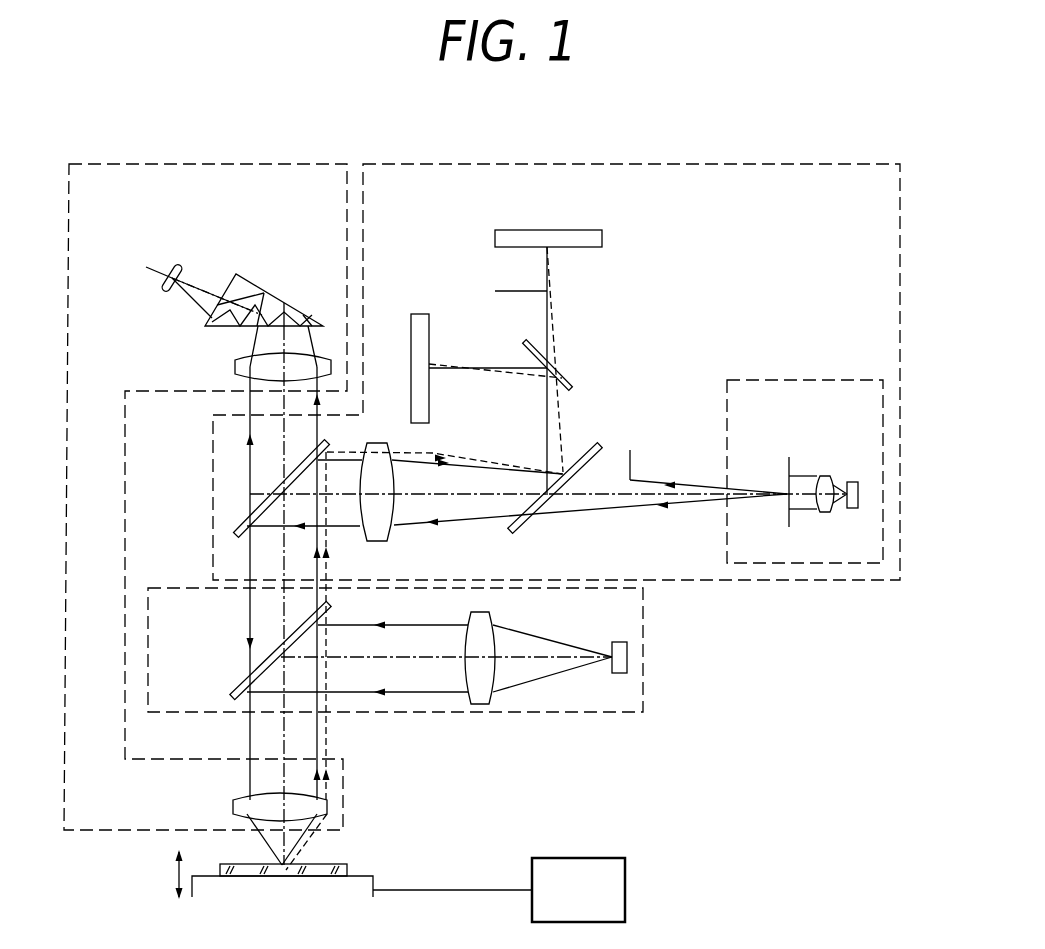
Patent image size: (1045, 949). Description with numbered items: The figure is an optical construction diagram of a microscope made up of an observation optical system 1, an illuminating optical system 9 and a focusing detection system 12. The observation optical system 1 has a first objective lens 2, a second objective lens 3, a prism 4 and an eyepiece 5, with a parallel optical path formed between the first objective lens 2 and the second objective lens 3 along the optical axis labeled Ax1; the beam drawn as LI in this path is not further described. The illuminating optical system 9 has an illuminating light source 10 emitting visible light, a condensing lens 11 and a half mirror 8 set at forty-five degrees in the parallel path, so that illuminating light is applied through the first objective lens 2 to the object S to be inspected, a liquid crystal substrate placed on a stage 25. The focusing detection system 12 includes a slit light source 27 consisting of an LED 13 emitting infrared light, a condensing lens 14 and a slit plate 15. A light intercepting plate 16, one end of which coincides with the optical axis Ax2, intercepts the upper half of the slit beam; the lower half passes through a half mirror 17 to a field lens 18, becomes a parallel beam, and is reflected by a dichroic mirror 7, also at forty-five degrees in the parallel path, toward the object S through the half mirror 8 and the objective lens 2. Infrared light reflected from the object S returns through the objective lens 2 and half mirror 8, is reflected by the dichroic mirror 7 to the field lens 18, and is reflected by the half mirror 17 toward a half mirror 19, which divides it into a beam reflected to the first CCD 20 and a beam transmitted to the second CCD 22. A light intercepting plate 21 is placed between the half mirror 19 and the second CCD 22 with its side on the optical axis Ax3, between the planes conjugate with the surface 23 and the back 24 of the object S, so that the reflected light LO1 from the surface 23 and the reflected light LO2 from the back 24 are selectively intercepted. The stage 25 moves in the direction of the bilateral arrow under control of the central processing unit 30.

The observation optical system 1 is at (275, 164).
The first objective lens 2 is at (233, 803).
The second objective lens 3 is at (235, 368).
The prism 4 is at (250, 277).
The eyepiece 5 is at (174, 262).
The dichroic mirror 7 is at (233, 530).
The half mirror 8 is at (242, 685).
The illuminating optical system 9 is at (643, 695).
The illuminating light source 10 is at (617, 642).
The condensing lens 11 is at (493, 694).
The focusing detection system 12 is at (700, 164).
The LED 13 is at (850, 482).
The condensing lens 14 is at (823, 512).
The slit plate 15 is at (789, 520).
The light intercepting plate 16 is at (633, 455).
The half mirror 17 is at (527, 530).
The field lens 18 is at (387, 537).
The half mirror 19 is at (572, 387).
The first charge coupled device 20 is at (411, 347).
The light intercepting plate 21 is at (513, 290).
The second charge coupled device 22 is at (602, 238).
The surface of the object 23 is at (333, 865).
The back of the object 24 is at (320, 877).
The stage 25 is at (375, 898).
The slit light source 27 is at (755, 380).
The central processing unit 30 is at (625, 902).
The object to be inspected S is at (347, 868).
The measuring light beam LI is at (247, 742).
The reflected beam of infrared light from the surface LO1 is at (550, 293).
The reflected beam of infrared light from the back LO2 is at (553, 328).
The first optical axis Ax1 is at (280, 603).
The optical axis Ax2 is at (592, 494).
The optical axis Ax3 is at (547, 435).